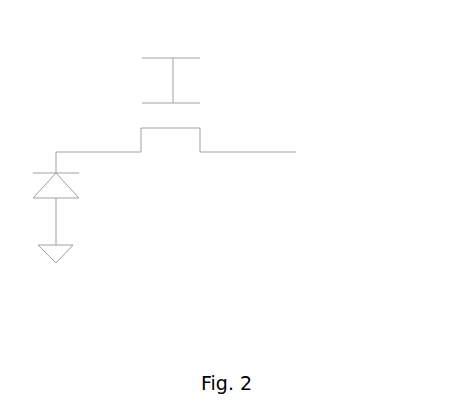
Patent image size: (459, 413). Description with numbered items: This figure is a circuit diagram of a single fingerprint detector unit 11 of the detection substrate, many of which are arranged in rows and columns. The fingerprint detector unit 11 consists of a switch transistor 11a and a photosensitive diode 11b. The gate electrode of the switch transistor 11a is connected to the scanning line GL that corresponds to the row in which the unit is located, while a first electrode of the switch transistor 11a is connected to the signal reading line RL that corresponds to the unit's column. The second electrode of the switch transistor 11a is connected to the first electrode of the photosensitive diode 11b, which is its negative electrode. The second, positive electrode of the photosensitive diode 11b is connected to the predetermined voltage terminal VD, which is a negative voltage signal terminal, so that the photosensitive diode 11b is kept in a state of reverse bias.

The fingerprint detector unit 11 is at (168, 167).
The switch transistor 11a is at (182, 161).
The photosensitive diode 11b is at (67, 198).
The scanning line GL is at (247, 58).
The signal reading line RL is at (321, 154).
The predetermined voltage terminal VD is at (64, 290).